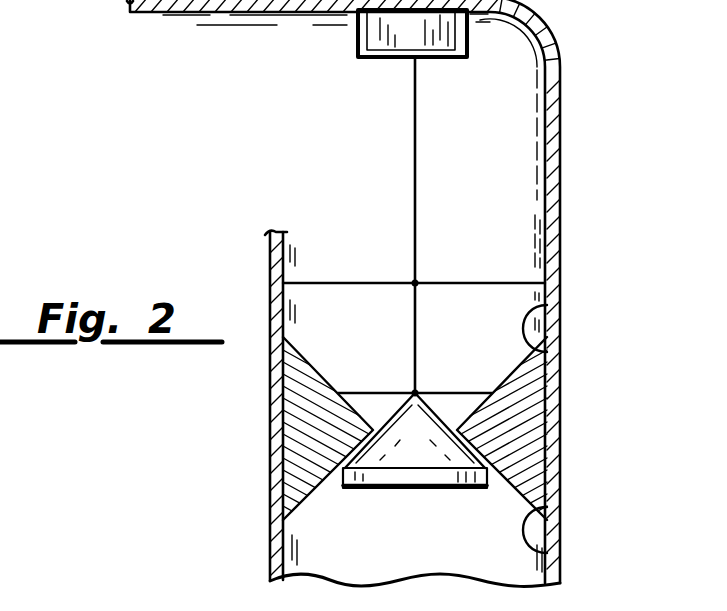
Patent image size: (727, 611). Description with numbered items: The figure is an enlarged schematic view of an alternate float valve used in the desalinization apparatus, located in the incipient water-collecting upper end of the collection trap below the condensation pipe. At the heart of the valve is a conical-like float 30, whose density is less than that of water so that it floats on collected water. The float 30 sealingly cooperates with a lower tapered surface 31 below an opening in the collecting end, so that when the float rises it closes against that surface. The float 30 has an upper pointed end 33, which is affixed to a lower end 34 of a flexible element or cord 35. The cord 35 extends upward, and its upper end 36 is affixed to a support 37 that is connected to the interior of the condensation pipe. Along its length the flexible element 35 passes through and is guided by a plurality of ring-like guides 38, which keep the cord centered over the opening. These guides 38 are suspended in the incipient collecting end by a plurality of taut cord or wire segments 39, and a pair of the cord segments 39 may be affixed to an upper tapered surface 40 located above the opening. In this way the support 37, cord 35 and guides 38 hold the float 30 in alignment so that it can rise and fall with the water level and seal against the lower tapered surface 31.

The conical-like float 30 is at (432, 455).
The lower tapered surface 31 is at (560, 557).
The upper pointed end 33 is at (433, 397).
The lower end 34 is at (413, 322).
The flexible element or cord 35 is at (400, 163).
The upper end 36 is at (415, 123).
The support 37 is at (388, 38).
The ring-like guides 38 is at (413, 281).
The taut cord or wire segments 39 is at (462, 283).
The upper tapered surface 40 is at (547, 310).